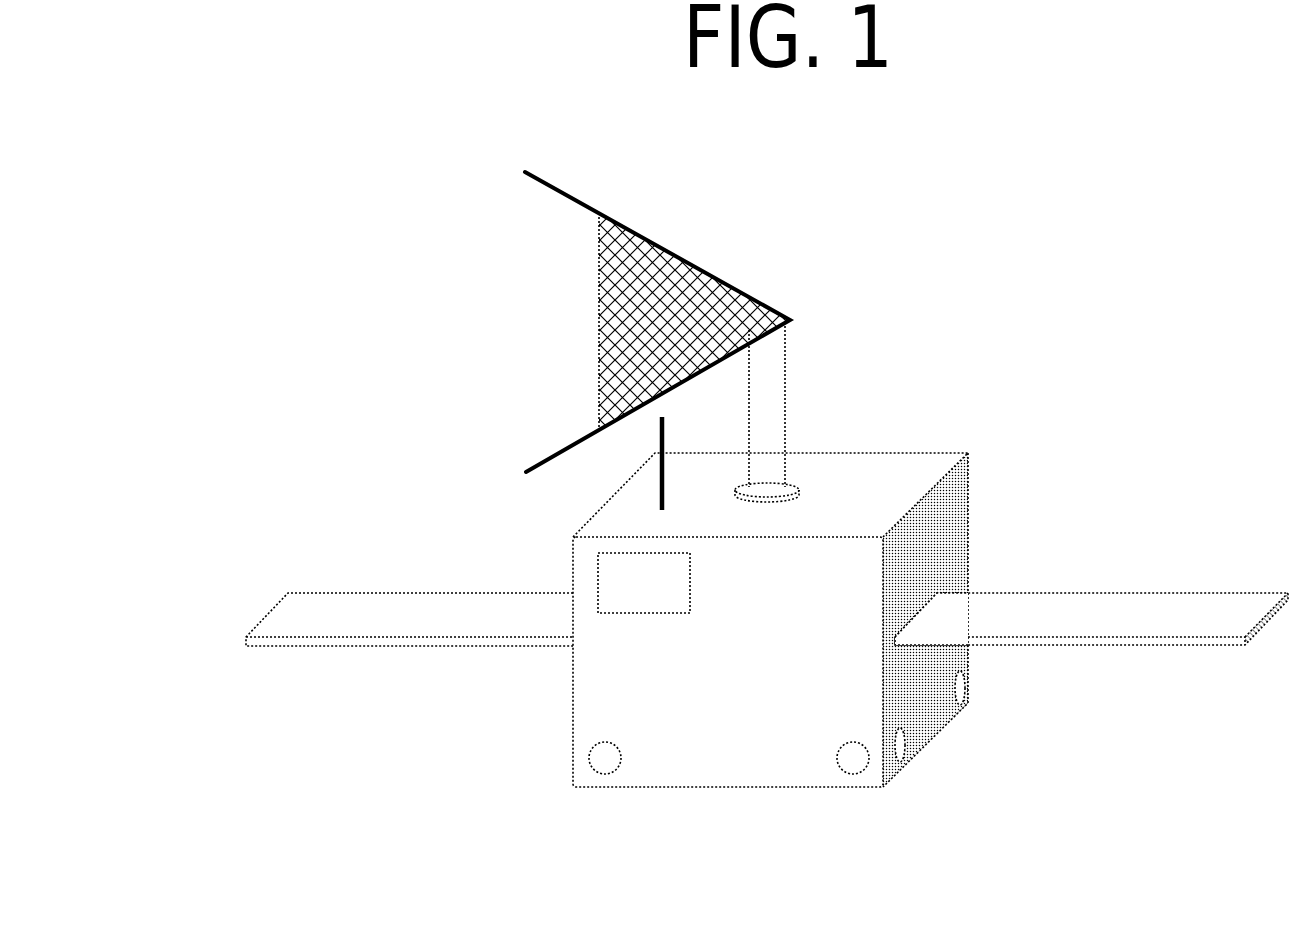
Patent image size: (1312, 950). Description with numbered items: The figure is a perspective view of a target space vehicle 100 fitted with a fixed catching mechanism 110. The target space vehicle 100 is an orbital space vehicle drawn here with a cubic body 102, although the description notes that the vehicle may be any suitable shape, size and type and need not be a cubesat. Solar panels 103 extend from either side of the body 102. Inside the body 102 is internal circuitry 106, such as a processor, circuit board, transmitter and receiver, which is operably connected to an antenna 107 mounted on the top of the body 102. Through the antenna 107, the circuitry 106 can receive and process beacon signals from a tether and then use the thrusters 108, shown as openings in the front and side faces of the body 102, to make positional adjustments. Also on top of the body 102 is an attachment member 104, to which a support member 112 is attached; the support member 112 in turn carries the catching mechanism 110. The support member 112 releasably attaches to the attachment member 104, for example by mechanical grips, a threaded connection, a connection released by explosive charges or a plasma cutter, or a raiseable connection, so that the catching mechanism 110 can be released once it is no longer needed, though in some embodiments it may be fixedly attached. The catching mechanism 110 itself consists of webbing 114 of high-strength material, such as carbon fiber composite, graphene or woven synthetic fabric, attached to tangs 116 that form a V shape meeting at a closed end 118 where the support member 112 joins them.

The target space vehicle 100 is at (333, 117).
The body 102 is at (898, 475).
The solar panels 103 is at (1112, 617).
The attachment member 104 is at (792, 490).
The internal circuitry 106 is at (643, 613).
The antenna 107 is at (657, 473).
The thrusters 108 is at (603, 774).
The catching mechanism 110 is at (496, 361).
The support member 112 is at (787, 418).
The webbing 114 is at (705, 297).
The tangs 116 is at (547, 192).
The closed end 118 is at (792, 320).